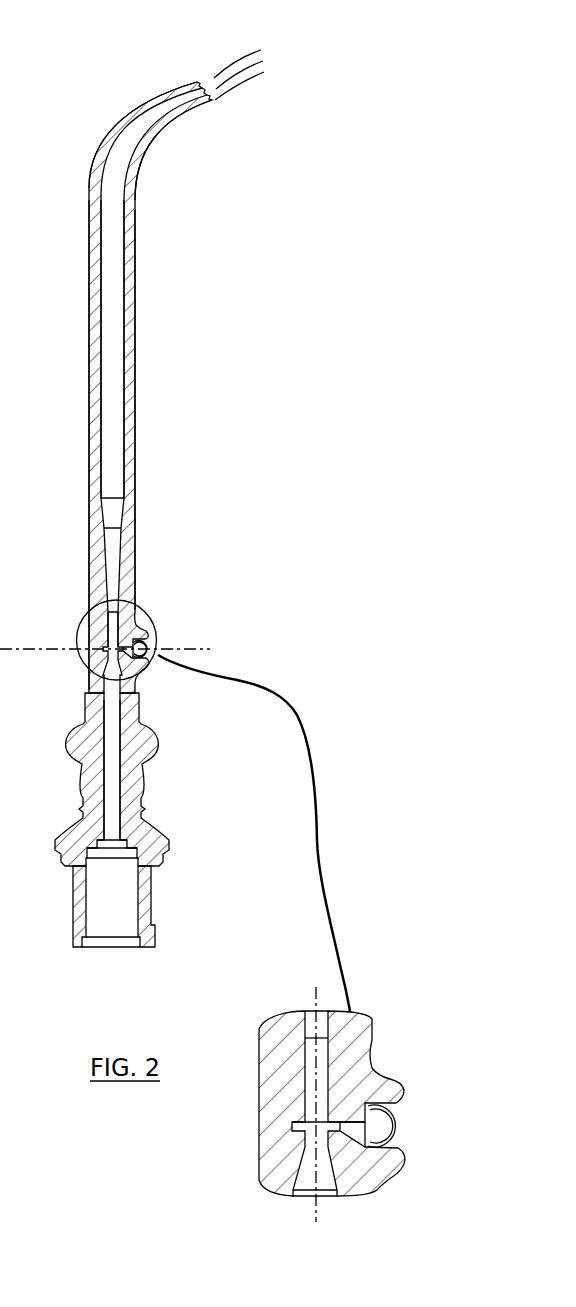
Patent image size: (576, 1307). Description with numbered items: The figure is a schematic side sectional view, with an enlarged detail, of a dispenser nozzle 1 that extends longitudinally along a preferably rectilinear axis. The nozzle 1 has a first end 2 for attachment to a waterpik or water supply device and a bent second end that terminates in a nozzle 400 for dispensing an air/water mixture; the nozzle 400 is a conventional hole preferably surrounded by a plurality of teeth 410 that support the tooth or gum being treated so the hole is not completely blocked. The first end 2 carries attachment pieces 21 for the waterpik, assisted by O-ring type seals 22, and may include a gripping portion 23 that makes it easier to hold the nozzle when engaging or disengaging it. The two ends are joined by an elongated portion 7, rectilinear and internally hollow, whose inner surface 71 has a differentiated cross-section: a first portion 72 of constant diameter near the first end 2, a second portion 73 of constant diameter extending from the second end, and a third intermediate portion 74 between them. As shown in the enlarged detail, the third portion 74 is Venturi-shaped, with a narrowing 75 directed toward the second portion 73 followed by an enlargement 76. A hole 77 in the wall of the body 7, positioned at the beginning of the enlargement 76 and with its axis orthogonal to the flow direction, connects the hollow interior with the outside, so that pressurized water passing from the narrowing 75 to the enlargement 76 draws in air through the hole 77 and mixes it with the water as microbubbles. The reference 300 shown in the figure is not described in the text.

The dispenser nozzle 1 is at (67, 280).
The first end 2 is at (62, 955).
The elongated portion 7 is at (90, 440).
The attachment pieces 21 is at (155, 938).
The O-ring type seals 22 is at (75, 918).
The gripping portion 23 is at (70, 798).
The inner surface 71 is at (125, 426).
The first portion 72 is at (122, 758).
The second portion 73 is at (130, 278).
The third intermediate portion 74 is at (118, 580).
The narrowing 75 is at (302, 1172).
The enlargement 76 is at (308, 1060).
The hole 77 is at (380, 1127).
The straight tube section 300 is at (83, 147).
The nozzle 400 is at (142, 97).
The teeth 410 is at (265, 73).